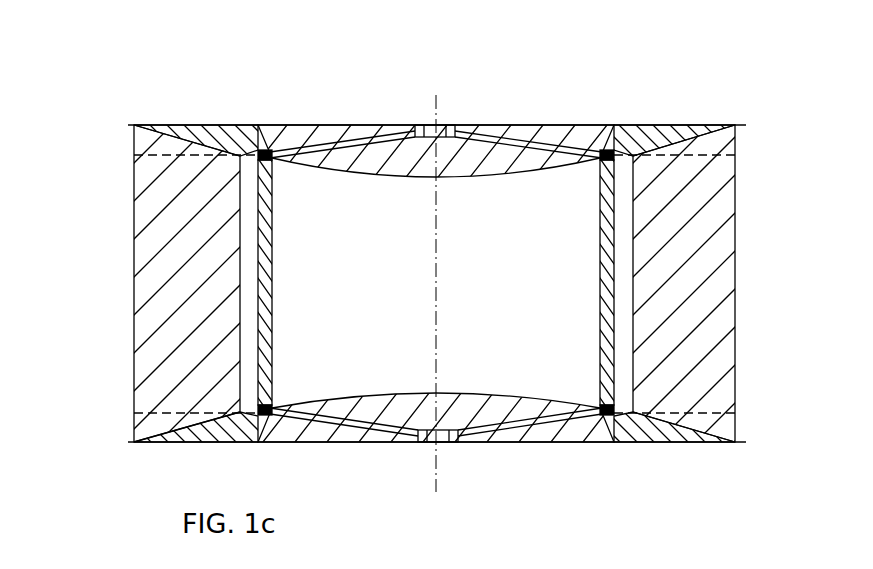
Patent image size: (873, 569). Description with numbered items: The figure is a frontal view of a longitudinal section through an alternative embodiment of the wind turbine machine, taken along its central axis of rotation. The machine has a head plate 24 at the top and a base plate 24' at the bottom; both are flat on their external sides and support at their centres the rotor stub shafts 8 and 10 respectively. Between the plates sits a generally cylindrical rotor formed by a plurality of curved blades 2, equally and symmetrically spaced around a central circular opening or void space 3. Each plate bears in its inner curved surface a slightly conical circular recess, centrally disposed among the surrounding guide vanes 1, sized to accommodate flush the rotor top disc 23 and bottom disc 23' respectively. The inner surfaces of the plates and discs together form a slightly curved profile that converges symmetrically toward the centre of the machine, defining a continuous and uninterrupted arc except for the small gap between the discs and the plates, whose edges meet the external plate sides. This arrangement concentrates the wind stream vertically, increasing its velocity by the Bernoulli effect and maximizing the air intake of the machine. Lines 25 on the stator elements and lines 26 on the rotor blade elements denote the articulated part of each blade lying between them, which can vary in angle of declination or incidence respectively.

The guide vanes 1 is at (176, 214).
The blades 2 is at (266, 292).
The central circular opening 3 is at (528, 345).
The rotor stub shaft 8 is at (437, 123).
The rotor stub shaft 10 is at (441, 447).
The rotor top disc 23 is at (433, 111).
The rotor bottom disc 23' is at (435, 445).
The head plate 24 is at (419, 88).
The base plate 24' is at (418, 461).
The articulation line on stator blade elements 25 is at (152, 153).
The articulation line on rotor blade elements 26 is at (265, 150).